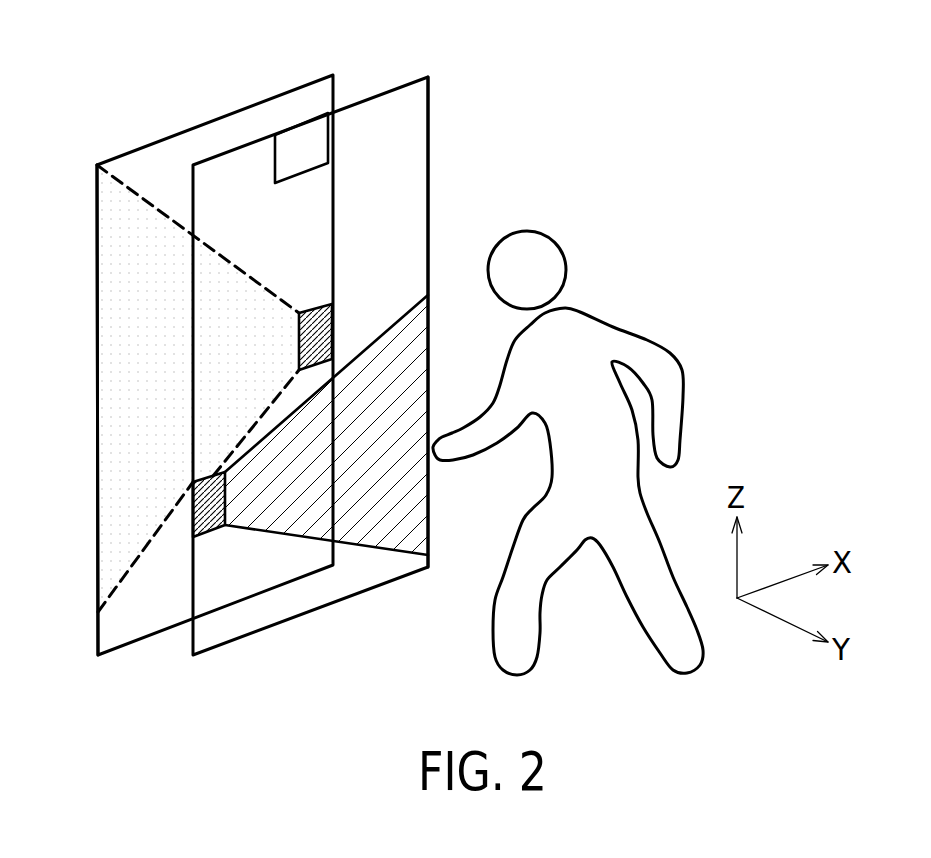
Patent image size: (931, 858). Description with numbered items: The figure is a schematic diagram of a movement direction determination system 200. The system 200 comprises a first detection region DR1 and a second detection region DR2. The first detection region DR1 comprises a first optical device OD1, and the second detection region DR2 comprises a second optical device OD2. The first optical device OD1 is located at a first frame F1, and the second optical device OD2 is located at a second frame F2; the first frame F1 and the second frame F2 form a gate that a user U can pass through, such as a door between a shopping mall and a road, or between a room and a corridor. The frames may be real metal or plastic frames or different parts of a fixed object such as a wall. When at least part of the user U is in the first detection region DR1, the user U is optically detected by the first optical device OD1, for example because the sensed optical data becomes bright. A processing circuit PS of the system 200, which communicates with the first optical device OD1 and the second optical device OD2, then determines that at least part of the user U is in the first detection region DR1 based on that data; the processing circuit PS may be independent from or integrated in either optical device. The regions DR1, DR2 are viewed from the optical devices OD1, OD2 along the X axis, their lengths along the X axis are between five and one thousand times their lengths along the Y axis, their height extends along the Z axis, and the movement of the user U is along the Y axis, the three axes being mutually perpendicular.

The movement direction determination system 200 is at (415, 356).
The first detection region DR1 is at (398, 103).
The second detection region DR2 is at (292, 103).
The first frame F1 is at (432, 110).
The second frame F2 is at (96, 222).
The processing circuit PS is at (301, 148).
The first optical device OD1 is at (193, 527).
The second optical device OD2 is at (332, 320).
The user U is at (603, 317).